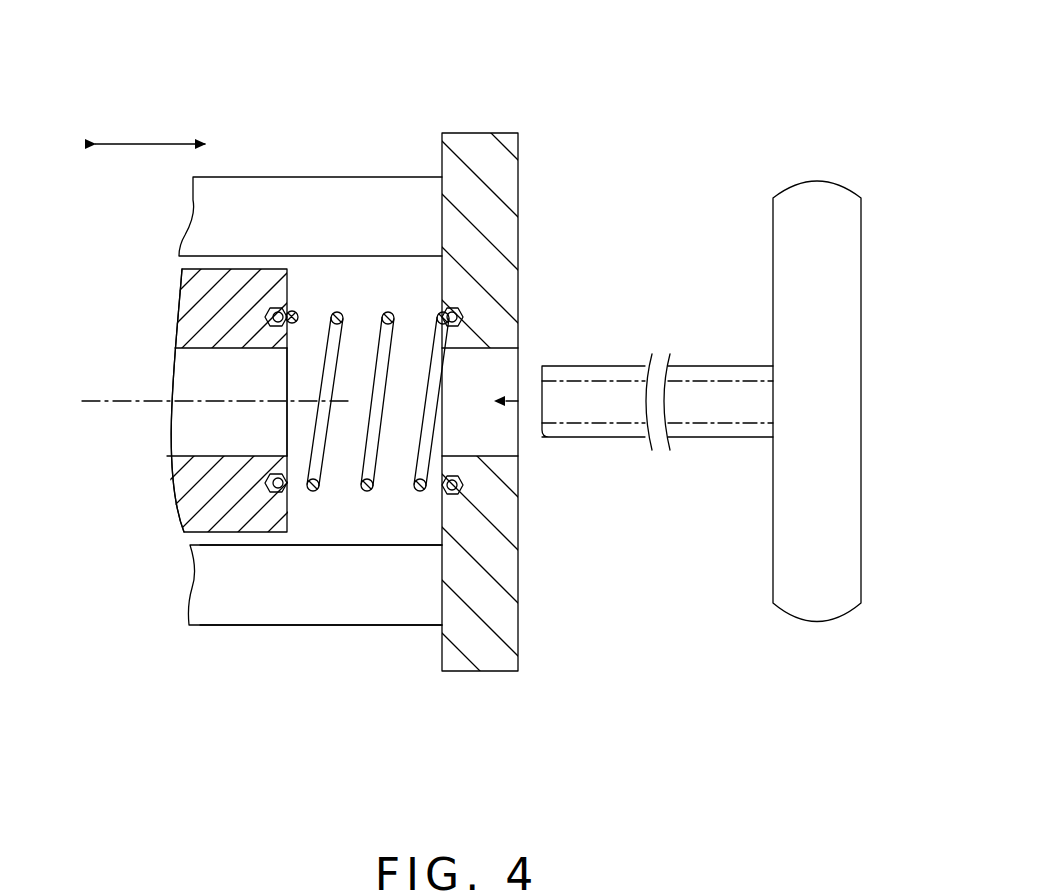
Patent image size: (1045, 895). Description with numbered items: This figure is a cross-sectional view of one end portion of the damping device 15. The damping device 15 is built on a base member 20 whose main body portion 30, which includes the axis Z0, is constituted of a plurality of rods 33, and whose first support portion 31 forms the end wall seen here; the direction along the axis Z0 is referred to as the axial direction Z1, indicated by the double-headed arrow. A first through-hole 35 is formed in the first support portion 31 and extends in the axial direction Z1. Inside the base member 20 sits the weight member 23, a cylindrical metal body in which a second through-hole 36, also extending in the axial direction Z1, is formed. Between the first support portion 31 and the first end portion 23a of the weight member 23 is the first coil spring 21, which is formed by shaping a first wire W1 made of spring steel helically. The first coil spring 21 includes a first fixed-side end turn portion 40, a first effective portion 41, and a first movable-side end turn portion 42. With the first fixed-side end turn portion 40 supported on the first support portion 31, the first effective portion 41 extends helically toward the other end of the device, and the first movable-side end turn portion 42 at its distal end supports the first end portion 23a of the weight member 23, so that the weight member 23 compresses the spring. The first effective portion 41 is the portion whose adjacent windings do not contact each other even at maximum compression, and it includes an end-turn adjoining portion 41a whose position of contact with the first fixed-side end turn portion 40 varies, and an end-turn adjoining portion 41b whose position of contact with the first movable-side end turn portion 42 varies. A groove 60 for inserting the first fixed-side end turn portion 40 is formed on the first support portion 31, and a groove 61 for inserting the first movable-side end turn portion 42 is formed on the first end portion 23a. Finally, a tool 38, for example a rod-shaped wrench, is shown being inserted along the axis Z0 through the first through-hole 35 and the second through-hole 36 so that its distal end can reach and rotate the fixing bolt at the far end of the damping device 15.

The damping device 15 is at (346, 74).
The base member 20 is at (393, 630).
The first coil spring 21 is at (388, 310).
The weight member 23 is at (183, 507).
The first end portion 23a is at (288, 500).
The main body portion 30 is at (288, 612).
The first support portion 31 is at (508, 570).
The rods 33 is at (200, 197).
The first through-hole 35 is at (518, 452).
The second through-hole 36 is at (190, 453).
The tool 38 is at (724, 362).
The first fixed-side end turn portion 40 is at (465, 317).
The first effective portion 41 is at (337, 310).
The end-turn adjoining portion 41a is at (437, 312).
The end-turn adjoining portion 41b is at (290, 310).
The first movable-side end turn portion 42 is at (287, 312).
The groove 60 is at (432, 328).
The groove 61 is at (293, 332).
The first wire W1 is at (378, 455).
The axis Z0 is at (102, 397).
The axial direction Z1 is at (148, 144).